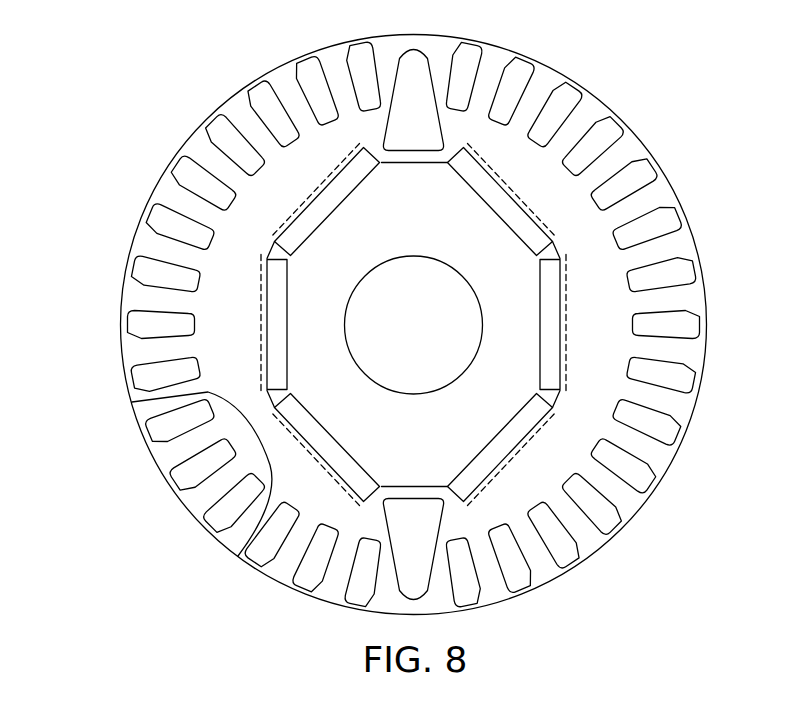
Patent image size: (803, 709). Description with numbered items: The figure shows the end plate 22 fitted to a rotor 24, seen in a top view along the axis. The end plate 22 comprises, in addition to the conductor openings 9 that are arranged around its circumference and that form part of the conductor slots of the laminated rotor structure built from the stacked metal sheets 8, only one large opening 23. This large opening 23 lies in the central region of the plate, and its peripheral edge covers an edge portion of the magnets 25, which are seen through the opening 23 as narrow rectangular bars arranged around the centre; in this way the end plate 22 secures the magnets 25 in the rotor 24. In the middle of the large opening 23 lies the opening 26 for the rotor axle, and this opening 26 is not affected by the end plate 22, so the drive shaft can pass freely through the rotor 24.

The metal sheet 8 is at (138, 449).
The conductor openings 9 is at (265, 105).
The end plate 22 is at (136, 179).
The large opening 23 is at (300, 337).
The rotor 24 is at (118, 427).
The magnets 25 is at (309, 228).
The opening for the rotor axle 26 is at (425, 285).